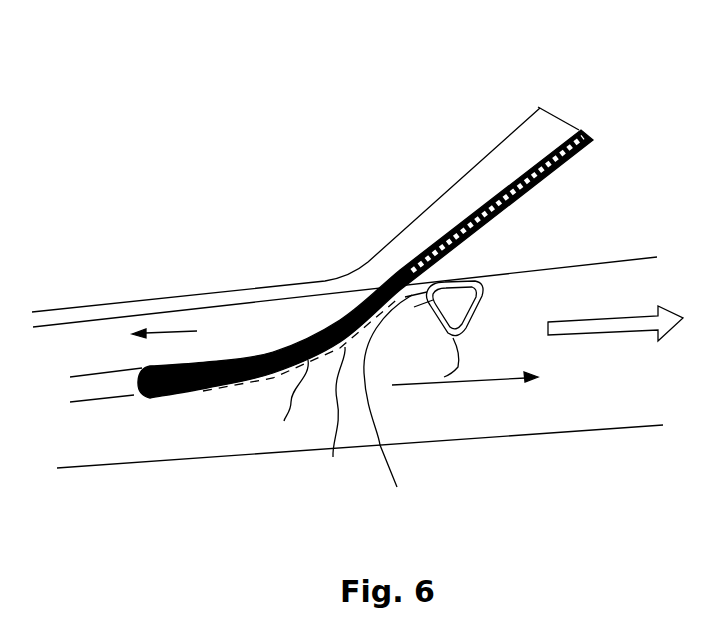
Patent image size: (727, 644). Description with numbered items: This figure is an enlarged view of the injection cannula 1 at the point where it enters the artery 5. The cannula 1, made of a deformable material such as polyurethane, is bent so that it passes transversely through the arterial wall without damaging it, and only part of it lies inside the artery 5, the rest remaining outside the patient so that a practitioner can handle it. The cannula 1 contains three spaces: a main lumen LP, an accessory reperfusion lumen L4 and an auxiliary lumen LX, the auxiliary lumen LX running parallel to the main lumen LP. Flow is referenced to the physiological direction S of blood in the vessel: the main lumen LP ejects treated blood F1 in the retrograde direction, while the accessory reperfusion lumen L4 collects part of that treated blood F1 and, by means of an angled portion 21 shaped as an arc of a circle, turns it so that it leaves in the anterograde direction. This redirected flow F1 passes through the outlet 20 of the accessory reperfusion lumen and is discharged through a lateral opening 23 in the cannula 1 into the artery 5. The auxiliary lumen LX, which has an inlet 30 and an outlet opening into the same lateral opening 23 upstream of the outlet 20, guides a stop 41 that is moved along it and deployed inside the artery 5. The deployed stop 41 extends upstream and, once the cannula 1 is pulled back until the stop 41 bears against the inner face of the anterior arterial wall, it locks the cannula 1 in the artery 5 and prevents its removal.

The injection cannula 1 is at (314, 256).
The artery 5 is at (593, 283).
The outlet of the accessory reperfusion lumen 20 is at (205, 392).
The angled portion 21 is at (136, 392).
The lateral opening 23 is at (345, 416).
The inlet of the auxiliary lumen 30 is at (392, 412).
The stop 41 is at (444, 377).
The main lumen LP is at (240, 335).
The auxiliary lumen LX is at (538, 107).
The accessory reperfusion lumen L4 is at (283, 405).
The physiological direction of blood flow S is at (615, 314).
The flow of treated blood F1 is at (335, 344).